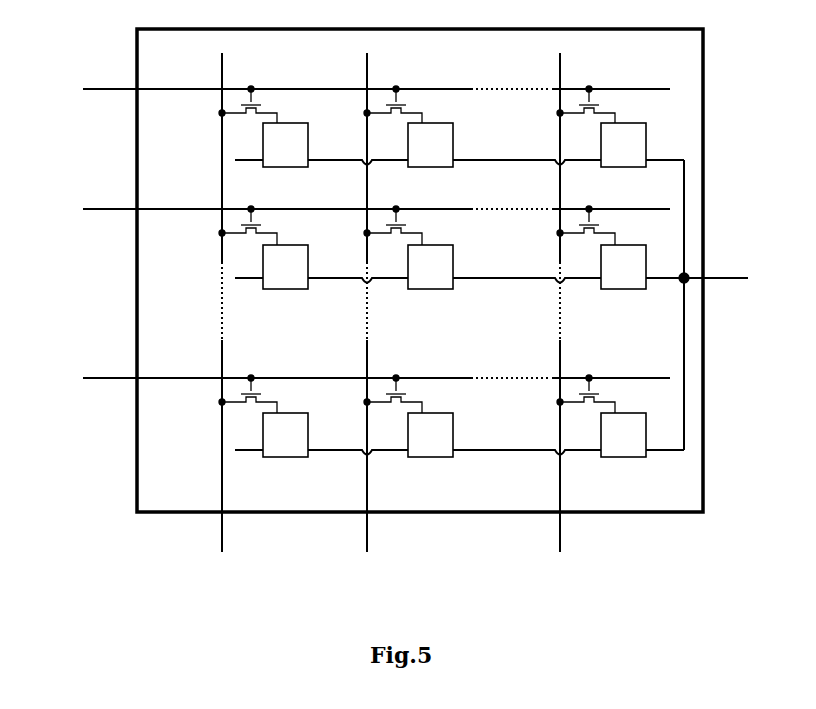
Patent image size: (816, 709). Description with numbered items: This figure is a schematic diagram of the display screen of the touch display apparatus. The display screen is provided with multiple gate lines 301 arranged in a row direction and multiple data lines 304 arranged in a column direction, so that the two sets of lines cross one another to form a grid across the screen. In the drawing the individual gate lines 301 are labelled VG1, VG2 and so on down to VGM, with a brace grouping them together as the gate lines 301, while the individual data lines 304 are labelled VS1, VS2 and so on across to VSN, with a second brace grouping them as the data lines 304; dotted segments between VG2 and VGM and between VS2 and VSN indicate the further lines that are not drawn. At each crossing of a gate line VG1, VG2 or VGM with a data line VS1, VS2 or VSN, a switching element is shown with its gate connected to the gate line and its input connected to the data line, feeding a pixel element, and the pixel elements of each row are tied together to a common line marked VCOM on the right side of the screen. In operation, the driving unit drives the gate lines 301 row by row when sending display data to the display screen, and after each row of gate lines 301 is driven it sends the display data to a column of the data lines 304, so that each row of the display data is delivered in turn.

The gate lines 301 is at (347, 237).
The data lines 304 is at (376, 332).
The common voltage line VCOM is at (721, 305).
The first gate line VG1 is at (376, 78).
The second gate line VG2 is at (376, 199).
The M-th gate line VGM is at (376, 368).
The first source line VS1 is at (203, 302).
The second source line VS2 is at (348, 302).
The N-th source line VSN is at (541, 302).